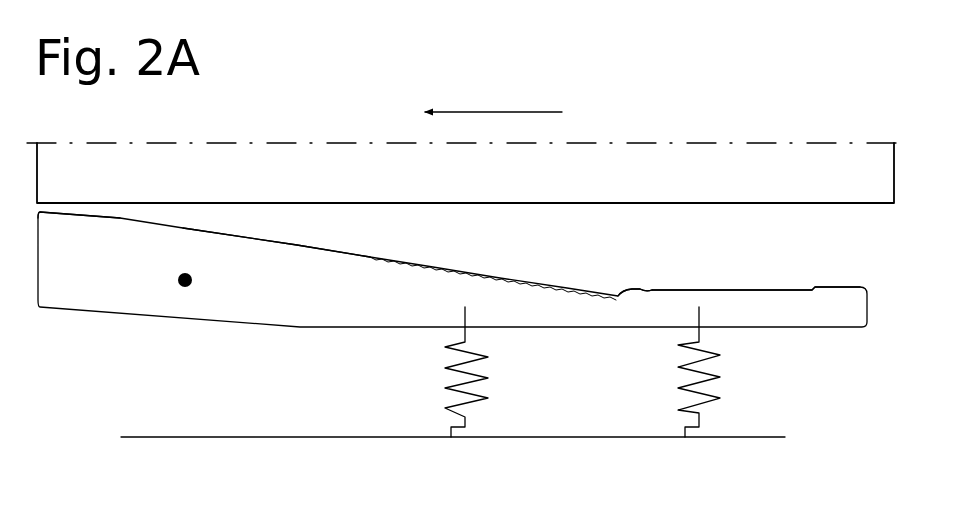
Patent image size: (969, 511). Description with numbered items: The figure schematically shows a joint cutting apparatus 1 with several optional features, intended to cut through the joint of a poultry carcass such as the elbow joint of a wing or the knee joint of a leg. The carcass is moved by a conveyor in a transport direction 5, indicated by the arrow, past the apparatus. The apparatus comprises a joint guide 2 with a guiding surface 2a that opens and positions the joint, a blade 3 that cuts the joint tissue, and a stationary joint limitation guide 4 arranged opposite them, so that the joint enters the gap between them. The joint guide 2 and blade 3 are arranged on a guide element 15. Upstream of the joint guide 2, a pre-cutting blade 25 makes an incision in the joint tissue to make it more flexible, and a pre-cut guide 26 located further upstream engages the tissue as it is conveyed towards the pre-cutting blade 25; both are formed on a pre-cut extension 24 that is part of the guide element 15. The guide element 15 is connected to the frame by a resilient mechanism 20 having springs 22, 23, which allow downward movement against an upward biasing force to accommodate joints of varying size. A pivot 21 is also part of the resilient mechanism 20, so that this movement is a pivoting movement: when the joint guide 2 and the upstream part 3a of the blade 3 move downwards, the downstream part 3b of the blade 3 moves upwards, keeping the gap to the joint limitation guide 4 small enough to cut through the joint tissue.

The joint cutting apparatus 1 is at (347, 100).
The joint guide 2 is at (452, 247).
The guiding surface 2a is at (438, 268).
The blade 3 is at (452, 247).
The upstream part of the blade 3a is at (297, 246).
The downstream part of the blade 3b is at (118, 220).
The joint limitation guide 4 is at (628, 167).
The transport direction 5 is at (490, 112).
The guide element 15 is at (372, 325).
The resilient mechanism 20 is at (522, 397).
The pivot 21 is at (183, 283).
The spring 22 is at (452, 438).
The spring 23 is at (684, 438).
The pre-cut extension 24 is at (780, 313).
The pre-cutting blade 25 is at (637, 290).
The pre-cut guide 26 is at (745, 290).